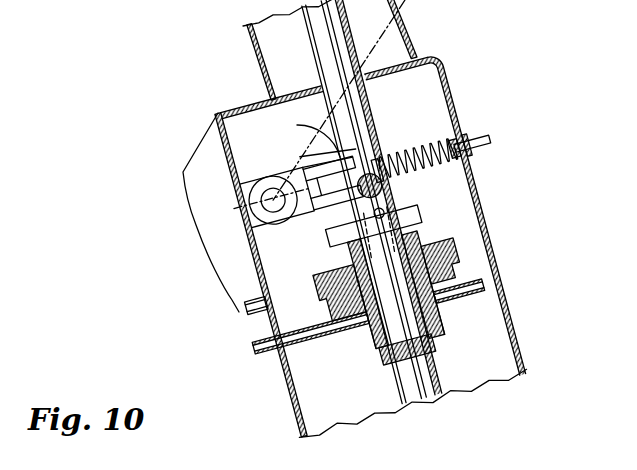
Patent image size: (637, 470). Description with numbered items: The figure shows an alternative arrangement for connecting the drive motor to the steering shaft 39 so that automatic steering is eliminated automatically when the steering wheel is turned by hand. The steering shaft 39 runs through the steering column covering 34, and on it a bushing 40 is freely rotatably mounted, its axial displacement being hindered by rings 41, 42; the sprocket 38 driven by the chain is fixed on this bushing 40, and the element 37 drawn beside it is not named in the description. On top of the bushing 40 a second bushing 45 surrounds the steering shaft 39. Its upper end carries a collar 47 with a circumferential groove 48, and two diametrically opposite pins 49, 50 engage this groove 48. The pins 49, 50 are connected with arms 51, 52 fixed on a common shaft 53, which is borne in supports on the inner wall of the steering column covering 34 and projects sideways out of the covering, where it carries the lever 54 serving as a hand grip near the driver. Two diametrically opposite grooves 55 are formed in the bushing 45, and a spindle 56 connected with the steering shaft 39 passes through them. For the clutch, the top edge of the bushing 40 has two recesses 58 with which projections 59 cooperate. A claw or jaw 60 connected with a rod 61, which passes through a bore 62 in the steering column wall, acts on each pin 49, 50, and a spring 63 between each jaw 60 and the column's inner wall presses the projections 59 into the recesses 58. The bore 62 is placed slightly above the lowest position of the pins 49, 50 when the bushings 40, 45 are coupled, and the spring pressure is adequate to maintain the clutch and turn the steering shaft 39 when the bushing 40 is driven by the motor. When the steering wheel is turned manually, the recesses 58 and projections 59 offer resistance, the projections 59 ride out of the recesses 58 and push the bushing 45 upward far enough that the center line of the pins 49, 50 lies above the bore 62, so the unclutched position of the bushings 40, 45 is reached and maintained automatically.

The steering column covering 34 is at (255, 58).
The lever 54 is at (406, 12).
The steering shaft 39 is at (322, 50).
The ring 41 is at (487, 233).
The support bar 37 is at (268, 352).
The sprocket 38 is at (460, 297).
The bushing 40 is at (380, 350).
The ring 42 is at (440, 348).
The second bushing 45 is at (414, 211).
The collar 47 is at (409, 156).
The circumferential groove 48 is at (297, 219).
The pin 49 is at (297, 125).
The pin 50 is at (318, 140).
The arm 51 is at (306, 157).
The arm 52 is at (290, 180).
The common shaft 53 is at (245, 205).
The grooves 55 is at (413, 238).
The spindle 56 is at (376, 216).
The recesses 58 is at (318, 293).
The projections 59 is at (466, 260).
The claw or jaw 60 is at (378, 166).
The rod 61 is at (478, 143).
The bore 62 is at (476, 160).
The spring 63 is at (470, 175).